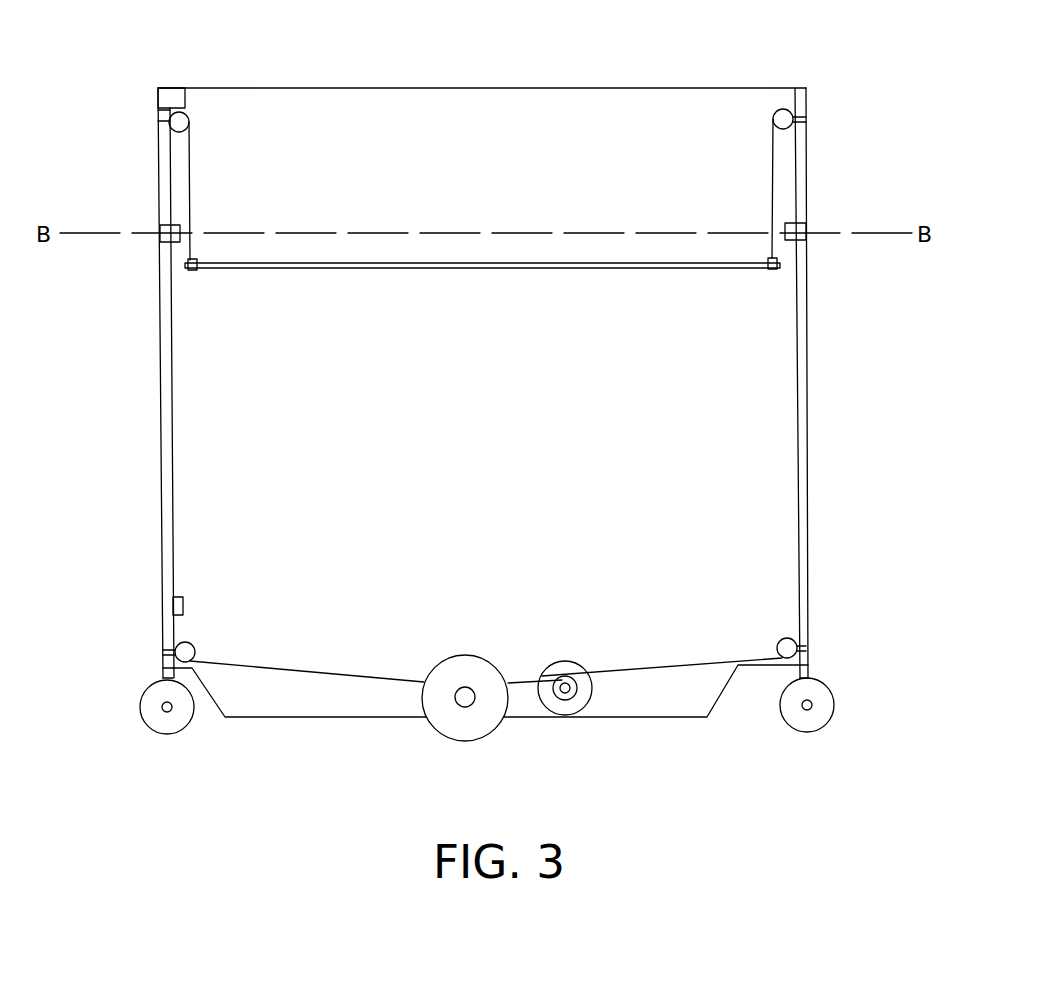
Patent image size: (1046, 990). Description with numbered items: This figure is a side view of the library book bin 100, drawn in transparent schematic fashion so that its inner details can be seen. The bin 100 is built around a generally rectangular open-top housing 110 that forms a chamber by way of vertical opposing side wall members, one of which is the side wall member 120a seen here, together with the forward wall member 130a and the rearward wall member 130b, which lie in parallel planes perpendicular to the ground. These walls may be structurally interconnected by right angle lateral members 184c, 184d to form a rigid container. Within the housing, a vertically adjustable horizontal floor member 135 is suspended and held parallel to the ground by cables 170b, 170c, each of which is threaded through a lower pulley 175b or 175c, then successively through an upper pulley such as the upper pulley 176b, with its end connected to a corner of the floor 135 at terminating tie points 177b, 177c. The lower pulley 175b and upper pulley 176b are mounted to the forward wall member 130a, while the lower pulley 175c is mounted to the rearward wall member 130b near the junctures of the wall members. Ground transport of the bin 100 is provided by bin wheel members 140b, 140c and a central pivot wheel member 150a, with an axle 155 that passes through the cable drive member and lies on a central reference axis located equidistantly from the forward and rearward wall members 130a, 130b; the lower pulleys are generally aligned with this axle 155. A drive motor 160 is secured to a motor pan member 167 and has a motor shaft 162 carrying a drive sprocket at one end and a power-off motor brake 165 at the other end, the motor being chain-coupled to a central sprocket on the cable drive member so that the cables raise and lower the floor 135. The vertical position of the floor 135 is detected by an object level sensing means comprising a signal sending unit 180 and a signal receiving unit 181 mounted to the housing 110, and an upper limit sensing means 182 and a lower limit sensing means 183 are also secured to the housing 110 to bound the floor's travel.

The book bin 100 is at (355, 766).
The housing 110 is at (597, 88).
The side wall member 120a is at (658, 432).
The forward wall member 130a is at (162, 328).
The rearward wall member 130b is at (807, 338).
The floor member 135 is at (440, 267).
The bin wheel member 140b is at (141, 711).
The bin wheel member 140c is at (832, 722).
The central pivot wheel member 150a is at (490, 735).
The axle 155 is at (463, 698).
The drive motor 160 is at (592, 692).
The motor shaft 162 is at (578, 686).
The motor brake 165 is at (578, 712).
The motor pan member 167 is at (268, 718).
The cable 170b is at (170, 183).
The cable 170c is at (795, 198).
The lower pulley 175b is at (165, 641).
The lower pulley 175c is at (786, 119).
The upper pulley 176b is at (180, 122).
The terminating tie point 177b is at (197, 267).
The terminating tie point 177c is at (770, 263).
The signal sending unit 180 is at (160, 234).
The signal receiving unit 181 is at (800, 236).
The upper limit sensing means 182 is at (172, 100).
The lower limit sensing means 183 is at (173, 603).
The lateral member 184c is at (165, 661).
The lateral member 184d is at (762, 660).